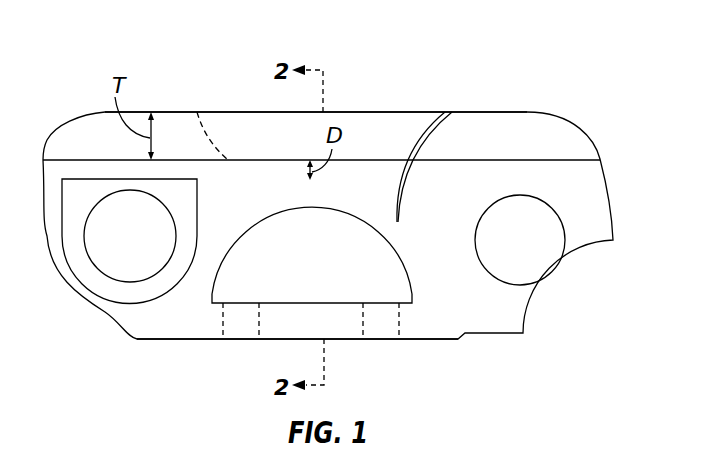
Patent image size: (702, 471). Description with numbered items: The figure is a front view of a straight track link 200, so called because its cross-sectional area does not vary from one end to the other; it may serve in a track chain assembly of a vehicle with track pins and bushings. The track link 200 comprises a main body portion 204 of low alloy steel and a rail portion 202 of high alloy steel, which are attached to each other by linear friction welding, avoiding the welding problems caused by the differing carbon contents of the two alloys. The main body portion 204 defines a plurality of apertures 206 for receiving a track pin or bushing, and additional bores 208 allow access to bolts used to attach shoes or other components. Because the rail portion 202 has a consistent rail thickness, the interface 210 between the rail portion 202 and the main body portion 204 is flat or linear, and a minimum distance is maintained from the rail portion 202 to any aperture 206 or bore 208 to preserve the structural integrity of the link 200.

The straight track link 200 is at (167, 56).
The rail portion 202 is at (553, 112).
The main body portion 204 is at (304, 312).
The apertures 206 is at (170, 253).
The additional bores 208 is at (312, 255).
The interface 210 is at (448, 159).